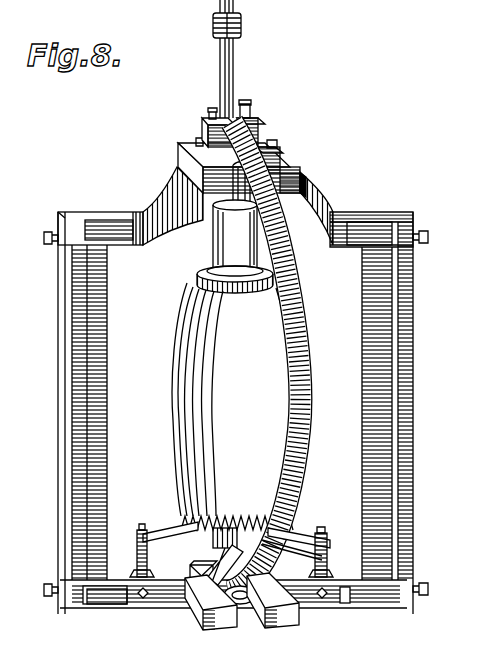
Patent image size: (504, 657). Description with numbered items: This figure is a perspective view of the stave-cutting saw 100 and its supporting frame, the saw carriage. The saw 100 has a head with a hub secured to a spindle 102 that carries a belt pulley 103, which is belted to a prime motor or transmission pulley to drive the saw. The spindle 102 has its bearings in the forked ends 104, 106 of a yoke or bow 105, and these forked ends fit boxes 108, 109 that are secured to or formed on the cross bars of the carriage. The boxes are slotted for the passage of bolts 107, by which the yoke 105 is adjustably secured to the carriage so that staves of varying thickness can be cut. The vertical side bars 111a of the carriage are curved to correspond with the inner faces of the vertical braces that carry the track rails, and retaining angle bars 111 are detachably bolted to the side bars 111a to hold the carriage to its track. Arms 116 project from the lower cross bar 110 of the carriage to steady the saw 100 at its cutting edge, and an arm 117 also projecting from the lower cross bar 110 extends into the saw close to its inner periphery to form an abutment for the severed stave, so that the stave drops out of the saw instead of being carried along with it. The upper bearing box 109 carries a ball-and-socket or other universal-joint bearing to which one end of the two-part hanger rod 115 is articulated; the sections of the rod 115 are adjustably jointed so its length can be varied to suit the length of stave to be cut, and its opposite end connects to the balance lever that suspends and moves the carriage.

The saw 100 is at (300, 400).
The spindle 102 is at (233, 168).
The belt pulley 103 is at (235, 246).
The forked end 104 is at (222, 556).
The yoke or bow 105 is at (284, 270).
The forked end 106 is at (257, 139).
The bolt 107 is at (202, 142).
The box 108 is at (226, 618).
The upper bearing box 109 is at (290, 183).
The lower cross bar 110 is at (178, 210).
The retaining angle bar 111 is at (78, 443).
The side bar 111a is at (96, 362).
The hanger rod 115 is at (235, 74).
The arm 116 is at (174, 530).
The arm 117 is at (274, 548).